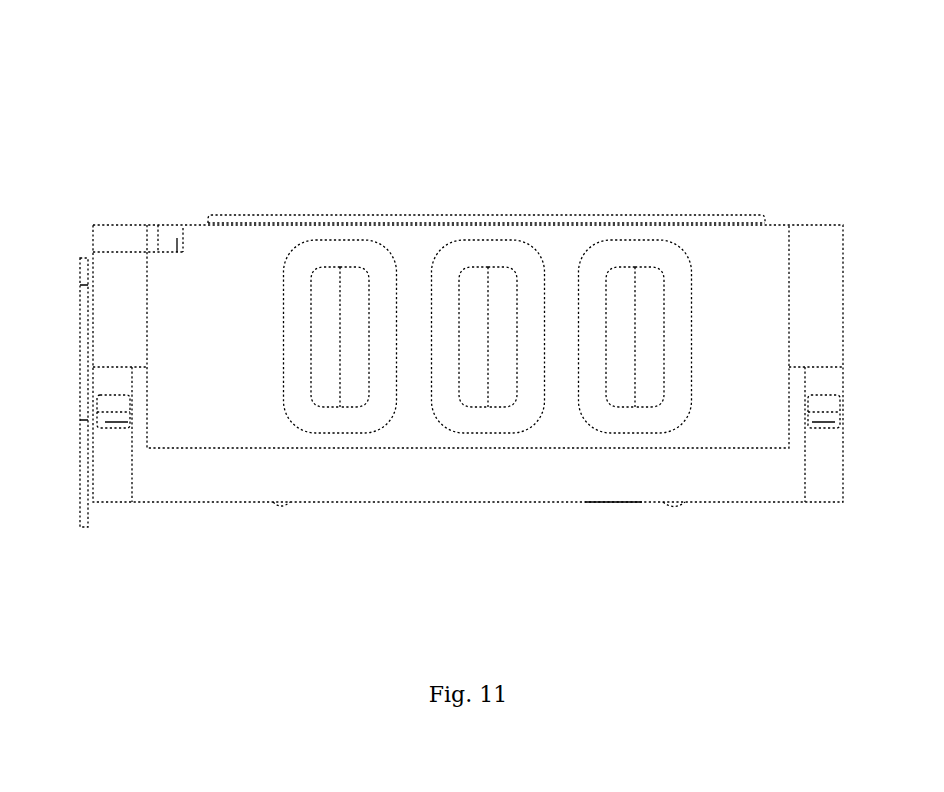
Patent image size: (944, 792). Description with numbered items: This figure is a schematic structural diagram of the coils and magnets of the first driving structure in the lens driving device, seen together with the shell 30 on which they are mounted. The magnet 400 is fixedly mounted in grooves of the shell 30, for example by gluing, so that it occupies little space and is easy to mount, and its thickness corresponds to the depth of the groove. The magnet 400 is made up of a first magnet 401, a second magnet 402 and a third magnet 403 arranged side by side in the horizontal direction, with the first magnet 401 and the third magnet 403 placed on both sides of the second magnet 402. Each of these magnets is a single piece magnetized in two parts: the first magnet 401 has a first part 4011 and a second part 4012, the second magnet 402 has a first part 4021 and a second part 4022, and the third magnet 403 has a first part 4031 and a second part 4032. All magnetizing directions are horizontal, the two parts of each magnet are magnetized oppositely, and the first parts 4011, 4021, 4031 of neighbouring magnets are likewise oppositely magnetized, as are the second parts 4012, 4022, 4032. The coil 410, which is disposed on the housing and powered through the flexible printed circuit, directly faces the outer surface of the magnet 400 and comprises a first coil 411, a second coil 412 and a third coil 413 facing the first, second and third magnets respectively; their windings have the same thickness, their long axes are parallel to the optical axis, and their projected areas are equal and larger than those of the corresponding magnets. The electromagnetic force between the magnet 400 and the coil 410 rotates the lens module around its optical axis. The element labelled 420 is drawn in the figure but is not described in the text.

The shell 30 is at (774, 240).
The magnet 400 is at (660, 107).
The first magnet 401 is at (318, 152).
The second magnet 402 is at (472, 152).
The third magnet 403 is at (610, 152).
The first part of the first magnet 4011 is at (322, 278).
The second part of the first magnet 4012 is at (354, 278).
The first part of the second magnet 4021 is at (472, 278).
The second part of the second magnet 4022 is at (502, 278).
The first part of the third magnet 4031 is at (620, 278).
The second part of the third magnet 4032 is at (651, 278).
The coil 410 is at (352, 557).
The first coil 411 is at (360, 415).
The second coil 412 is at (488, 415).
The third coil 413 is at (610, 417).
The hook 420 is at (277, 502).